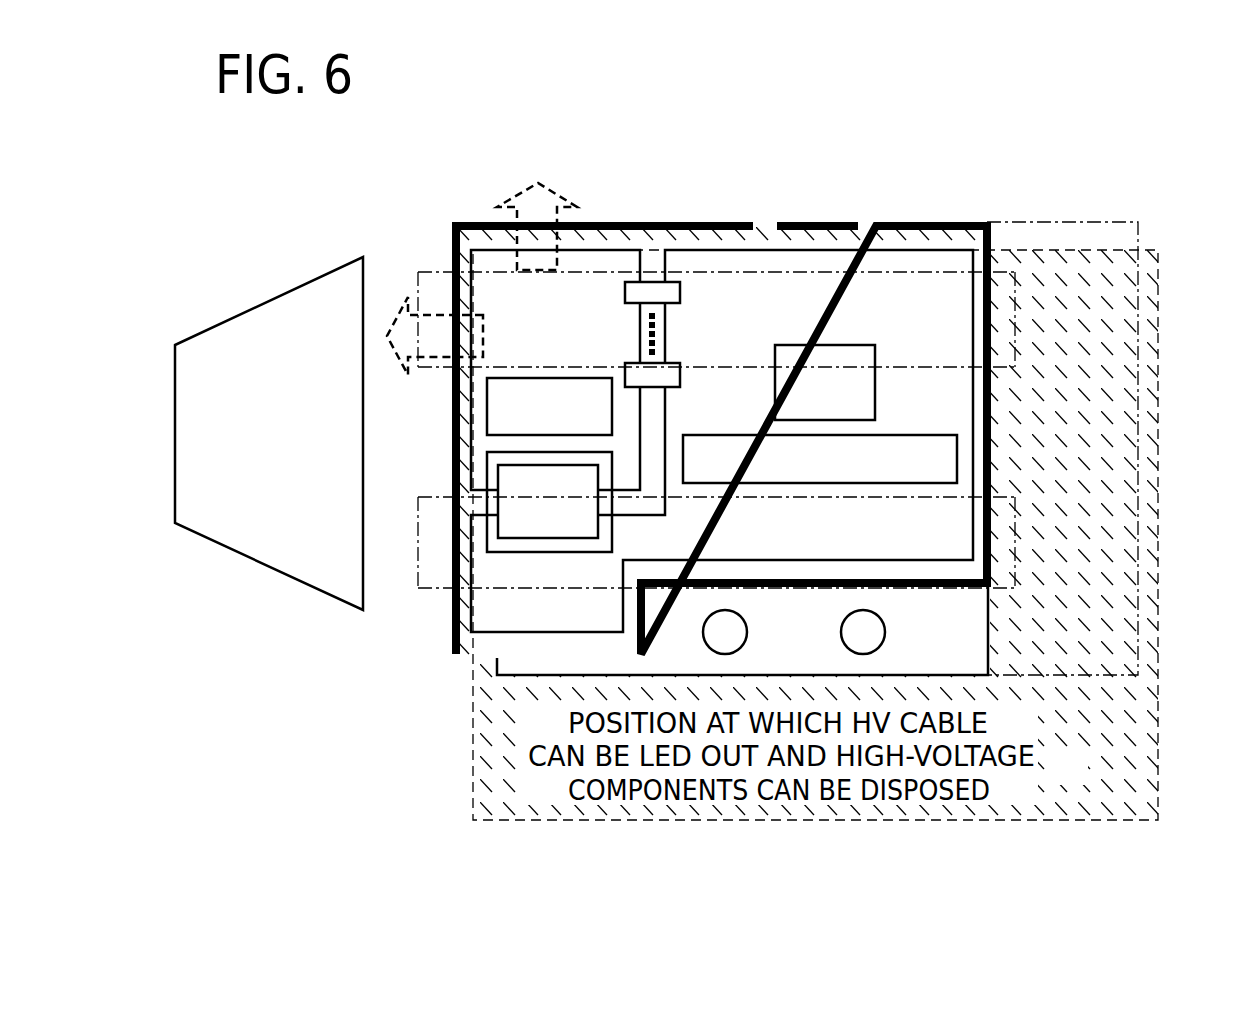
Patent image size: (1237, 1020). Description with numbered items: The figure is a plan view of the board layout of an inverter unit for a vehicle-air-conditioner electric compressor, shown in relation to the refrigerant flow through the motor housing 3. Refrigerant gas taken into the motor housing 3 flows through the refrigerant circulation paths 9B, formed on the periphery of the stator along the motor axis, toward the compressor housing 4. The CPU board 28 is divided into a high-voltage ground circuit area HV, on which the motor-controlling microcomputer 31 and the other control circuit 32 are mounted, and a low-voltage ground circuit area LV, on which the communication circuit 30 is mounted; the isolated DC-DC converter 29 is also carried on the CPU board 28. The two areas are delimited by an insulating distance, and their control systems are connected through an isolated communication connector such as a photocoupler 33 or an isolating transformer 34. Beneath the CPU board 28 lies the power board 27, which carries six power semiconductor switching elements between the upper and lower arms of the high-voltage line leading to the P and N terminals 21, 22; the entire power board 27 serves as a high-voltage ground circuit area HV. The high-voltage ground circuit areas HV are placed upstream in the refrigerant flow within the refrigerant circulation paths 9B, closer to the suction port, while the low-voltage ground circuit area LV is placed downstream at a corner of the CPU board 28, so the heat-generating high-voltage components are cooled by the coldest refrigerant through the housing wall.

The motor housing 3 is at (1108, 675).
The compressor housing 4 is at (265, 305).
The refrigerant circulation paths 9B is at (762, 272).
The P terminal 21 is at (747, 632).
The N terminal 22 is at (885, 632).
The power board 27 is at (499, 675).
The CPU board 28 is at (905, 222).
The isolated DC-DC converter 29 is at (487, 464).
The communication circuit 30 is at (487, 403).
The motor-controlling microcomputer 31 is at (858, 345).
The other control circuit 32 is at (915, 483).
The photocoupler 33 is at (680, 292).
The isolating transformer 34 is at (598, 525).
The low-voltage ground circuit area LV is at (482, 250).
The high-voltage ground circuit area HV is at (978, 675).